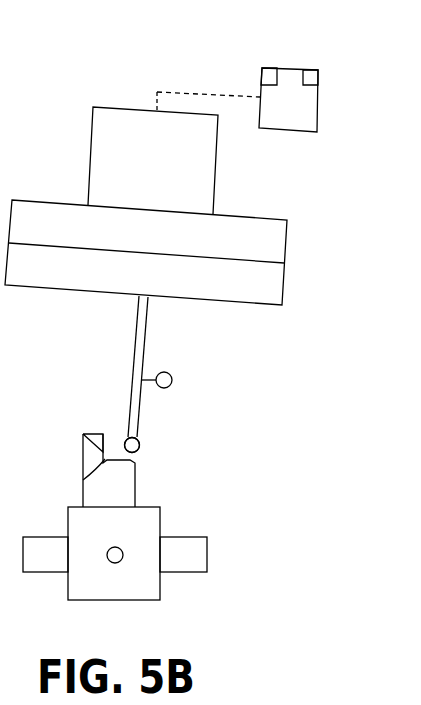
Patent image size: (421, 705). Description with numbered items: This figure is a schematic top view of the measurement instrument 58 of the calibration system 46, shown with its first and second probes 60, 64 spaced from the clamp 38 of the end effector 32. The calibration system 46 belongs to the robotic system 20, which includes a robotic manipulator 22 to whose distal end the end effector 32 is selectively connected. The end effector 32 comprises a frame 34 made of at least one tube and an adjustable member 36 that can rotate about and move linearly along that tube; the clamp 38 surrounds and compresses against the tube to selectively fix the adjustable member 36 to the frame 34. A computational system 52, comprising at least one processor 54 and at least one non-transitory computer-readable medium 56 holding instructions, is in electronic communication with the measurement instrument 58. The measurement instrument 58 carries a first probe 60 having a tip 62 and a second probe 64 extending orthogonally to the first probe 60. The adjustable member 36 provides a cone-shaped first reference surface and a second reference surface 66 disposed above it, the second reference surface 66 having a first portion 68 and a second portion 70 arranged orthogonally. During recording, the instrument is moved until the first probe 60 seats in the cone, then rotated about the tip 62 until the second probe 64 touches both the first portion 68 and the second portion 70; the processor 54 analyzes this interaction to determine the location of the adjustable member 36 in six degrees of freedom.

The robotic system 20 is at (225, 36).
The robotic manipulator 22 is at (132, 115).
The end effector 32 is at (240, 496).
The frame 34 is at (43, 553).
The adjustable member 36 is at (110, 563).
The clamp 38 is at (135, 582).
The calibration system 46 is at (260, 394).
The computational system 52 is at (300, 111).
The processor 54 is at (268, 67).
The non-transitory computer-readable medium 56 is at (312, 77).
The measurement instrument 58 is at (280, 283).
The first probe 60 is at (139, 392).
The tip 62 is at (140, 441).
The second probe 64 is at (160, 370).
The second reference surface 66 is at (83, 462).
The first portion 68 is at (138, 448).
The second portion 70 is at (83, 434).